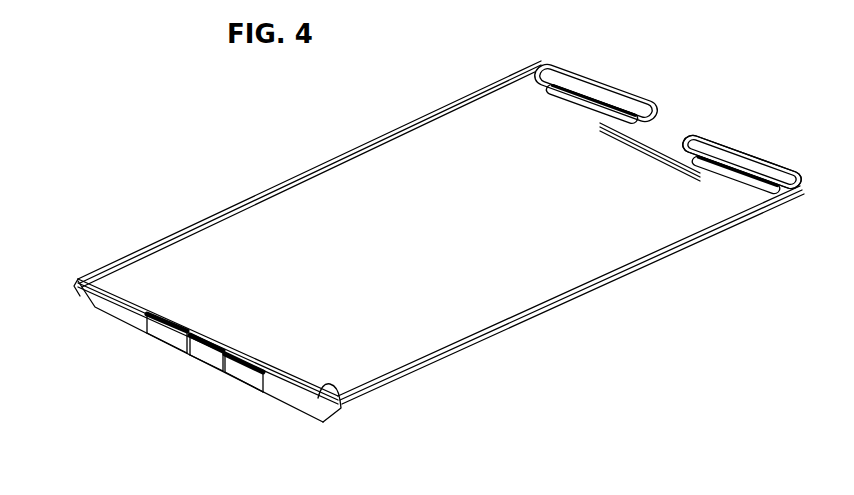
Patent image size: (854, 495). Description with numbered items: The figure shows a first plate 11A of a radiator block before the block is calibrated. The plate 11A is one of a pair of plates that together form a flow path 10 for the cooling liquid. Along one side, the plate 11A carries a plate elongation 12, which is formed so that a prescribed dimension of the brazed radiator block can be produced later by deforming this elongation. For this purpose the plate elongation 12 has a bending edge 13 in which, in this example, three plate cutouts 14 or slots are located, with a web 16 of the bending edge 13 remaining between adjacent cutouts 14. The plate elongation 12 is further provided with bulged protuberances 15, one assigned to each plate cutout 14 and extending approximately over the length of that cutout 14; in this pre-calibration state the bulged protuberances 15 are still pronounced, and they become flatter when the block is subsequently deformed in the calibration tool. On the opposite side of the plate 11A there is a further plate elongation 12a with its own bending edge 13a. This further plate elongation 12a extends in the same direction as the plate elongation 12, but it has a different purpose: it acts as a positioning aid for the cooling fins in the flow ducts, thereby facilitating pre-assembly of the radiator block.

The flow path 10 is at (443, 241).
The plate 11A is at (275, 138).
The plate elongation 12 is at (122, 313).
The further plate elongation 12a is at (648, 140).
The bending edge 13 is at (78, 280).
The bending edge 13a is at (742, 162).
The plate cutout 14 is at (140, 322).
The bulged protuberance 15 is at (167, 340).
The web 16 is at (205, 345).